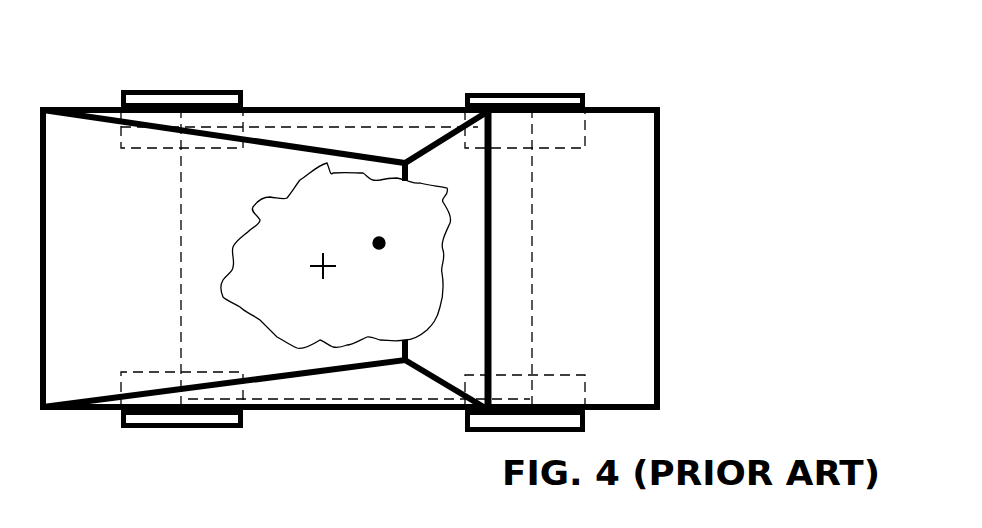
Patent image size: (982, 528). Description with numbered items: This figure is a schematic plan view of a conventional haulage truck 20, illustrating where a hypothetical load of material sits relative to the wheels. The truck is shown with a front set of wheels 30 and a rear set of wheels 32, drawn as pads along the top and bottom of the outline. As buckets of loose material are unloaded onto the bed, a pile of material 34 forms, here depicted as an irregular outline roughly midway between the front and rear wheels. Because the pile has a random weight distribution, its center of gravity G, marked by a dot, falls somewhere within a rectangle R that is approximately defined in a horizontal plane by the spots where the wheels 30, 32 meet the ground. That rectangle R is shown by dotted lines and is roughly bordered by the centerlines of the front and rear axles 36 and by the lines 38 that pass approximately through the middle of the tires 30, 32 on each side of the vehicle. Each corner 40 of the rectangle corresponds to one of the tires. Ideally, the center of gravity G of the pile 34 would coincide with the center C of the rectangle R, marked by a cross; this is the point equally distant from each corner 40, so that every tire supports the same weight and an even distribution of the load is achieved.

The truck 20 is at (690, 222).
The front set of wheels 30 is at (565, 107).
The rear set of wheels 32 is at (227, 107).
The pile of material 34 is at (222, 297).
The centerlines of the front and rear axles 36 is at (181, 200).
The lines passing through the middle of the tires 38 is at (368, 125).
The corner 40 is at (181, 120).
The center of gravity G is at (375, 238).
The center of the rectangle C is at (330, 270).
The rectangle R is at (320, 128).